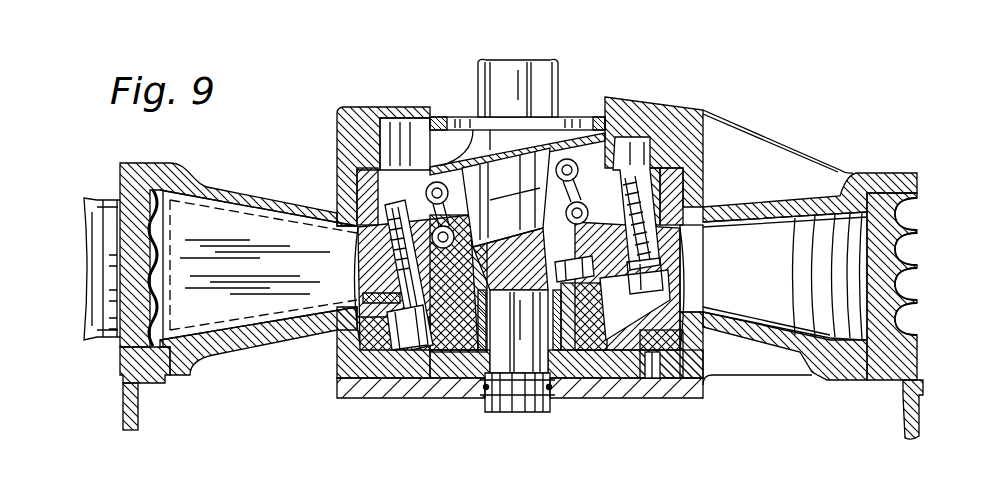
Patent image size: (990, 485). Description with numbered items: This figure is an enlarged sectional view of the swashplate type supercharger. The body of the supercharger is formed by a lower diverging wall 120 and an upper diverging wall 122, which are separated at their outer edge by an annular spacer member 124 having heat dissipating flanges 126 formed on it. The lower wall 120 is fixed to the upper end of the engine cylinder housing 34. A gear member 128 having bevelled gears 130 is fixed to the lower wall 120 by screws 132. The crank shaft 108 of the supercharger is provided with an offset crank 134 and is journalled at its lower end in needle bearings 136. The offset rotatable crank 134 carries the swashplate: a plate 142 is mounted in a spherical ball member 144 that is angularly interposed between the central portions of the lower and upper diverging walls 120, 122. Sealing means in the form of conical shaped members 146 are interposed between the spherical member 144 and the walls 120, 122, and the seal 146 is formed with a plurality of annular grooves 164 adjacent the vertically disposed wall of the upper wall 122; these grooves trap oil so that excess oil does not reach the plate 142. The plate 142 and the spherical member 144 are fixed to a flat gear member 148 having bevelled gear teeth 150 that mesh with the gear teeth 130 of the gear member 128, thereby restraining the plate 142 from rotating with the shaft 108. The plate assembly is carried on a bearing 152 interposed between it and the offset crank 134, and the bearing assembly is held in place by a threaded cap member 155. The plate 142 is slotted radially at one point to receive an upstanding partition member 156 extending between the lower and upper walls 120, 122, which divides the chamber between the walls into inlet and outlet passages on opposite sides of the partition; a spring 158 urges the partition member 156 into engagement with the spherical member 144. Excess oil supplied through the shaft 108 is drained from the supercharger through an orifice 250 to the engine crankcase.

The crank shaft 108 is at (516, 88).
The offset crank 134 is at (473, 150).
The bearing 152 is at (573, 150).
The threaded cap member 155 is at (627, 120).
The spring 158 is at (153, 207).
The upper diverging wall 122 is at (230, 197).
The partition member 156 is at (257, 240).
The annular grooves 164 is at (357, 180).
The flat gear member 148 is at (357, 280).
The lower diverging wall 120 is at (223, 342).
The engine cylinder housing 34 is at (121, 394).
The screws 132 is at (442, 378).
The needle bearings 136 is at (477, 378).
The gear member 128 is at (590, 342).
The orifice 250 is at (653, 388).
The conical shaped members 146 is at (683, 170).
The plate 142 is at (727, 232).
The spherical ball member 144 is at (683, 268).
The bevelled gears 130 is at (607, 292).
The bevelled gear teeth 150 is at (575, 268).
The annular spacer member 124 is at (907, 268).
The heat dissipating flanges 126 is at (919, 310).